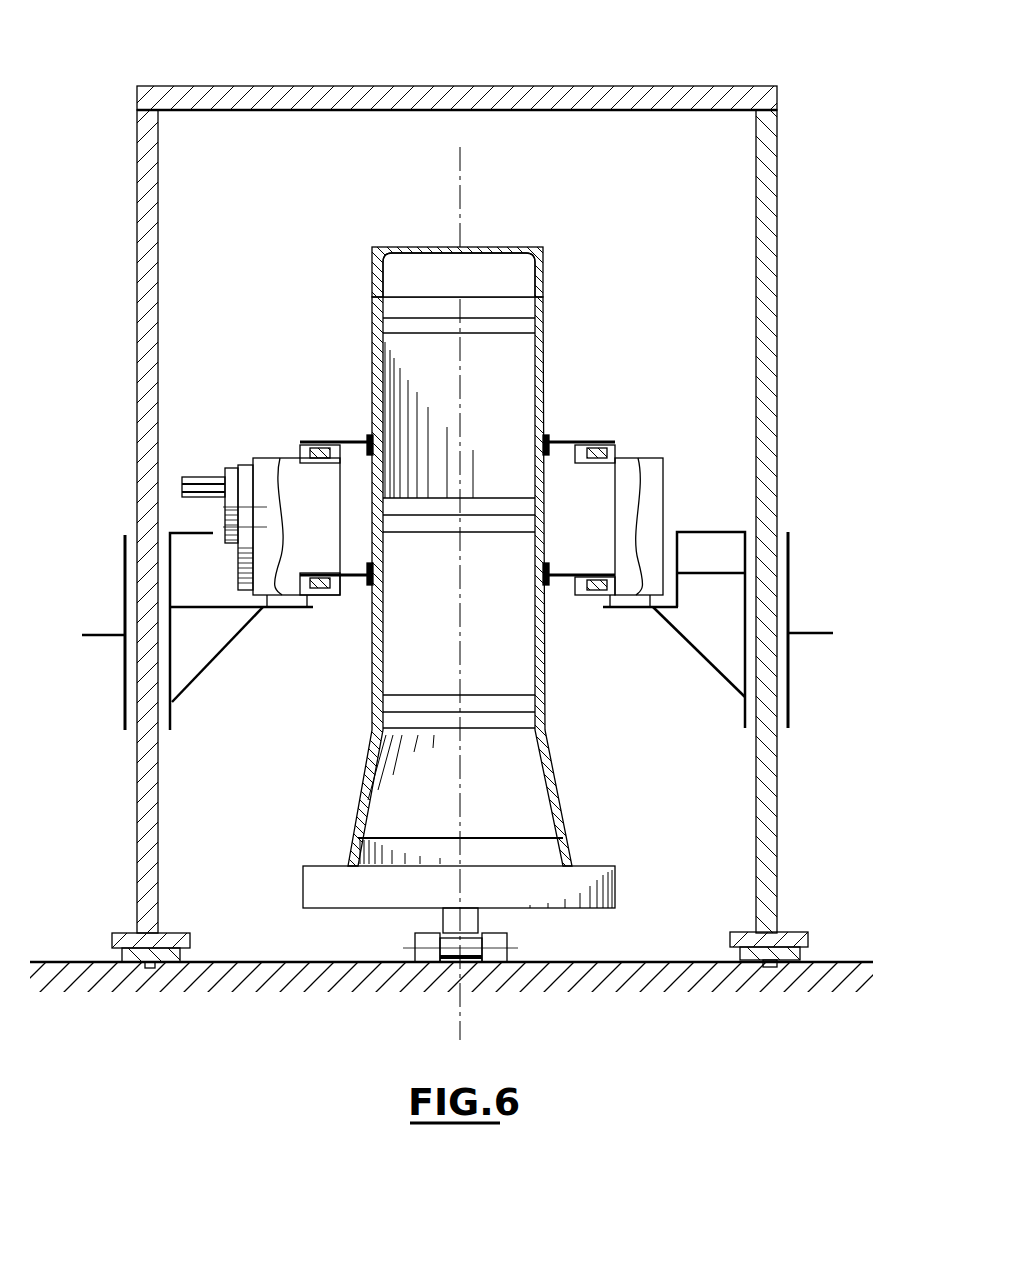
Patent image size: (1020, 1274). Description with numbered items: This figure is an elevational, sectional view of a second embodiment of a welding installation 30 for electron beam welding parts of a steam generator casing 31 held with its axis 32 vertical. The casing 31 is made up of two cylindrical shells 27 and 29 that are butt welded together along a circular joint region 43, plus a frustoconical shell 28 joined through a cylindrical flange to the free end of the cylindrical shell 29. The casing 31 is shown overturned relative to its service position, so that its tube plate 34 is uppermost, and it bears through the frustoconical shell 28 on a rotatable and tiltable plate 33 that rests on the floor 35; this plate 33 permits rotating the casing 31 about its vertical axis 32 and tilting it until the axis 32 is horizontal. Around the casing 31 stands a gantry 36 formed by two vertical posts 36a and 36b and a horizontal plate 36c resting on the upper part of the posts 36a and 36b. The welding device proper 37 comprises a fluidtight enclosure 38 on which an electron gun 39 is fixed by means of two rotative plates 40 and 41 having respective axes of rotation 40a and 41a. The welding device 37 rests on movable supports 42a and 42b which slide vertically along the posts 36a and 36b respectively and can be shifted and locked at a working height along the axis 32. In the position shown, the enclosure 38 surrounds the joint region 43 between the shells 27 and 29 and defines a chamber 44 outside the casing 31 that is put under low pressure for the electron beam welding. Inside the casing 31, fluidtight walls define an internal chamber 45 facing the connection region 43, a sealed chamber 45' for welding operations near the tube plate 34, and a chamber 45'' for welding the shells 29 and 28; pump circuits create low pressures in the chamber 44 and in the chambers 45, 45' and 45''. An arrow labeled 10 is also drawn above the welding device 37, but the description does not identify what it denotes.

The direction of clamp movement 10 is at (318, 430).
The cylindrical shell 27 is at (540, 358).
The frustoconical shell 28 is at (567, 808).
The cylindrical shell 29 is at (545, 680).
The installation 30 is at (468, 488).
The casing 31 is at (494, 512).
The axis 32 is at (462, 208).
The rotatable and tiltable plate 33 is at (330, 887).
The tube plate 34 is at (422, 265).
The floor 35 is at (451, 993).
The gantry 36 is at (453, 488).
The vertical post 36a is at (153, 892).
The vertical post 36b is at (770, 862).
The horizontal plate 36c is at (510, 97).
The welding device 37 is at (211, 472).
The fluidtight enclosure 38 is at (670, 470).
The electron gun 39 is at (197, 482).
The rotative plate 40 is at (232, 477).
The axis of rotation 40a is at (197, 507).
The rotative plate 41 is at (248, 475).
The axis of rotation 41a is at (197, 527).
The movable support 42a is at (202, 637).
The movable support 42b is at (720, 630).
The joint region 43 is at (545, 512).
The chamber 44 is at (300, 526).
The internal chamber 45 is at (459, 545).
The sealed chamber 45' is at (459, 359).
The chamber 45'' is at (459, 752).